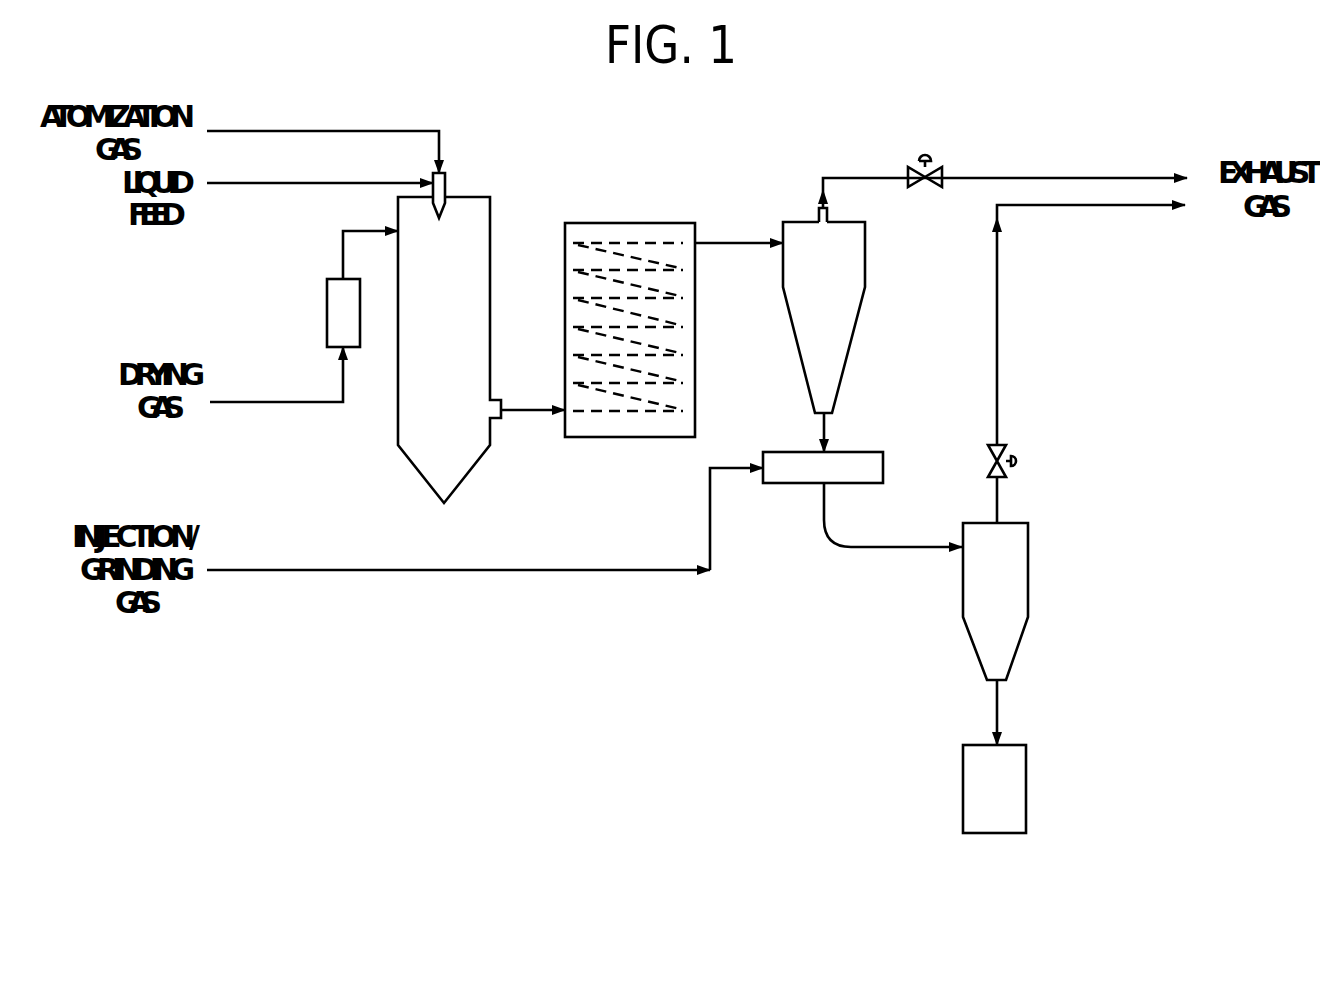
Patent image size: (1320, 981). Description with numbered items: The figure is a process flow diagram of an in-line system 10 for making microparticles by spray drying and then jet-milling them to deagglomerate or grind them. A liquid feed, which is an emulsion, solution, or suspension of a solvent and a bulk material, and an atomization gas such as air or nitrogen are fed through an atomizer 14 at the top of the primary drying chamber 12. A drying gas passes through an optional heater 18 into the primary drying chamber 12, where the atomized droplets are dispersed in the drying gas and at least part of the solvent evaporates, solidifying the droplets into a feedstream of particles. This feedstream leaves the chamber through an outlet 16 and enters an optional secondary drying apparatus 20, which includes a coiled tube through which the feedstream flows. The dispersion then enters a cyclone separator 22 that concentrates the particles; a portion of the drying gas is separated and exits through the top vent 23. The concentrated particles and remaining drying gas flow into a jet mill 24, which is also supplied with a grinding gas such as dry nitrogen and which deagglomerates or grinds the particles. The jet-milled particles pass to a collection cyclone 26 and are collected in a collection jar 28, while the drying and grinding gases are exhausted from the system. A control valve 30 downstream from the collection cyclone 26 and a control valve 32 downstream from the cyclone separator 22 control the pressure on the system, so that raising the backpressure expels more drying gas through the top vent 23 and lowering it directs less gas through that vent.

The in-line system 10 is at (612, 627).
The primary drying chamber 12 is at (492, 265).
The atomizer 14 is at (440, 187).
The outlet 16 is at (498, 397).
The heater 18 is at (335, 310).
The secondary drying apparatus 20 is at (655, 437).
The cyclone separator 22 is at (857, 263).
The top vent 23 is at (818, 212).
The jet mill 24 is at (875, 470).
The collection cyclone 26 is at (1028, 580).
The collection jar 28 is at (1017, 795).
The control valve 30 is at (1007, 453).
The control valve 32 is at (930, 172).